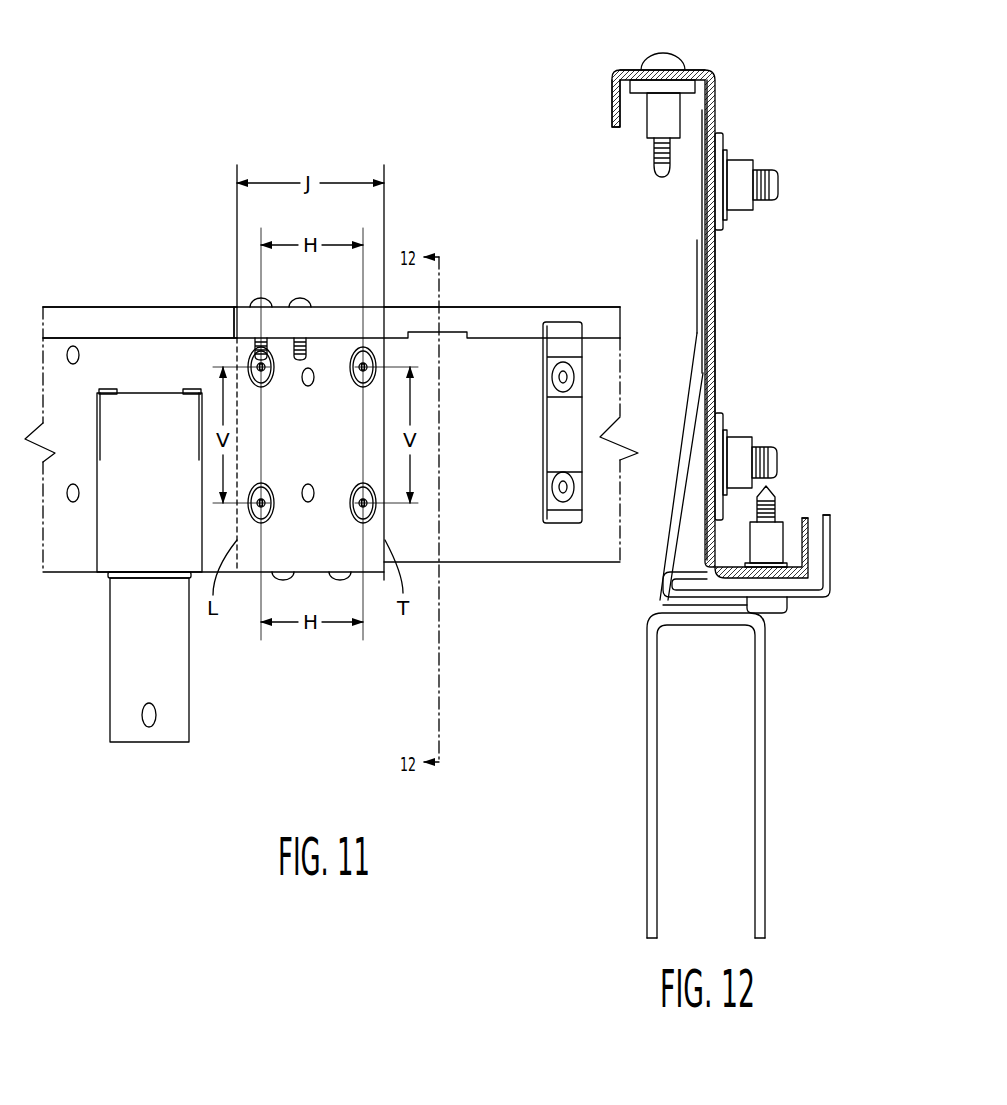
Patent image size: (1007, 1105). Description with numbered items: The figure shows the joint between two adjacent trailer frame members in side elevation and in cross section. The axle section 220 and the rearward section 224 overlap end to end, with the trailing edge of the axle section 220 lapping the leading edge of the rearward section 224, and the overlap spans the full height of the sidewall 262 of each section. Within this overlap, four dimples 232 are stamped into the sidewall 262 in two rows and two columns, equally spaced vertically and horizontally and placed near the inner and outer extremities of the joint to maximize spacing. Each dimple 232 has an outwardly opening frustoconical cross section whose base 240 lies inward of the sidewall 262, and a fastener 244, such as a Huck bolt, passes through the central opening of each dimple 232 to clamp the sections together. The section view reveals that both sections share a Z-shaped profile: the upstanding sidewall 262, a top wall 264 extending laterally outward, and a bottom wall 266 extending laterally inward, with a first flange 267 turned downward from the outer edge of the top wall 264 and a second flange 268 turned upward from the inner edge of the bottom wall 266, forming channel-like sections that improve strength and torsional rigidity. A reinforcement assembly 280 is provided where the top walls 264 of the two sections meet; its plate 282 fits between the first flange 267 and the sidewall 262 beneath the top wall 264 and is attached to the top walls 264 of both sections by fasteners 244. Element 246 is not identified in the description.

In FIG. 11, the axle section 220 is at (163, 307).
In FIG. 12, the axle section 220 is at (795, 590).
In FIG. 11, the rearward section 224 is at (483, 318).
In FIG. 12, the rearward section 224 is at (721, 294).
In FIG. 11, the dimples 232 is at (261, 388).
In FIG. 12, the dimples 232 is at (723, 140).
In FIG. 12, the base 240 is at (723, 228).
In FIG. 12, the fastener 244 is at (670, 60).
In FIG. 12, the bracket flange 246 is at (715, 240).
In FIG. 11, the sidewall 262 is at (122, 352).
In FIG. 12, the sidewall 262 is at (715, 345).
In FIG. 11, the top wall 264 is at (138, 307).
In FIG. 12, the top wall 264 is at (702, 70).
In FIG. 11, the bottom wall 266 is at (72, 575).
In FIG. 12, the bottom wall 266 is at (778, 598).
In FIG. 11, the first flange 267 is at (208, 307).
In FIG. 12, the first flange 267 is at (612, 97).
In FIG. 12, the second flange 268 is at (810, 515).
In FIG. 12, the reinforcement assembly 280 is at (627, 147).
In FIG. 12, the plate 282 is at (636, 80).